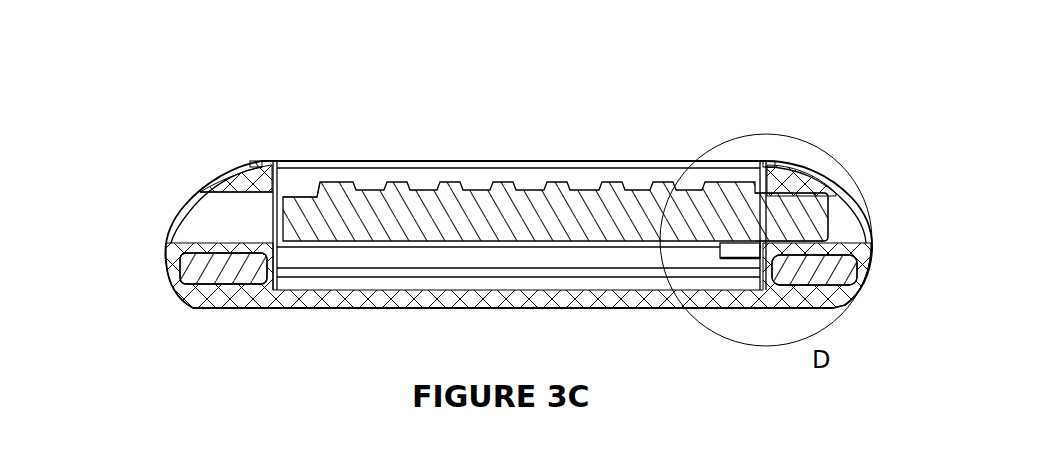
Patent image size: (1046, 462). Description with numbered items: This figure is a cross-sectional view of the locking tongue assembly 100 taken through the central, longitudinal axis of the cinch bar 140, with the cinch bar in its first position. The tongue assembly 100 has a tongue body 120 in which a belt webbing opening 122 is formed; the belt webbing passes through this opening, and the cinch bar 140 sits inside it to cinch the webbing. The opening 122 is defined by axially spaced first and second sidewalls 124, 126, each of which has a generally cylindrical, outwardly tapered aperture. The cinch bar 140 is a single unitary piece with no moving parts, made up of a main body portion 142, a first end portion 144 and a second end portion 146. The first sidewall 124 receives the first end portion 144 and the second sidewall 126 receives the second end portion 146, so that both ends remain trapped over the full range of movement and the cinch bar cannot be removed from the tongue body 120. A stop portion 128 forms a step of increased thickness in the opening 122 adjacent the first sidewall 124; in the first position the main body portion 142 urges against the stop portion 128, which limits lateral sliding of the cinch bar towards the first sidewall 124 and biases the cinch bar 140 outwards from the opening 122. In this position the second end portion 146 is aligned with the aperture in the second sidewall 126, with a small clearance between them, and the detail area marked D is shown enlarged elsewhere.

The tongue assembly 100 is at (158, 149).
The tongue body 120 is at (835, 266).
The belt webbing opening 122 is at (478, 257).
The first sidewall 124 is at (765, 263).
The second sidewall 126 is at (280, 258).
The stop portion 128 is at (740, 252).
The cinch bar 140 is at (643, 183).
The main body portion 142 is at (598, 218).
The first end portion 144 is at (777, 220).
The second end portion 146 is at (293, 197).